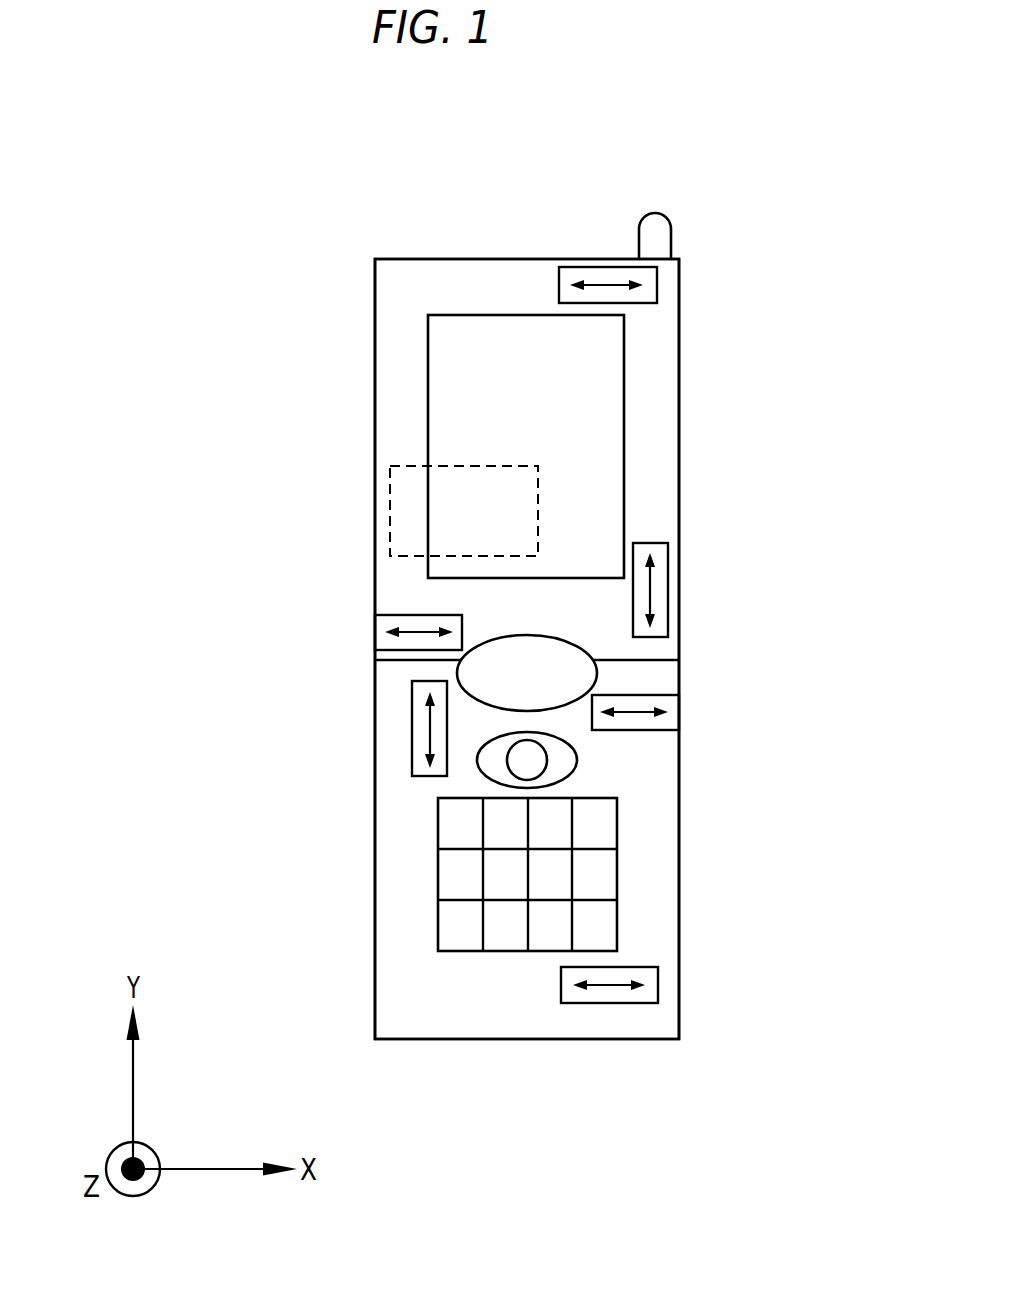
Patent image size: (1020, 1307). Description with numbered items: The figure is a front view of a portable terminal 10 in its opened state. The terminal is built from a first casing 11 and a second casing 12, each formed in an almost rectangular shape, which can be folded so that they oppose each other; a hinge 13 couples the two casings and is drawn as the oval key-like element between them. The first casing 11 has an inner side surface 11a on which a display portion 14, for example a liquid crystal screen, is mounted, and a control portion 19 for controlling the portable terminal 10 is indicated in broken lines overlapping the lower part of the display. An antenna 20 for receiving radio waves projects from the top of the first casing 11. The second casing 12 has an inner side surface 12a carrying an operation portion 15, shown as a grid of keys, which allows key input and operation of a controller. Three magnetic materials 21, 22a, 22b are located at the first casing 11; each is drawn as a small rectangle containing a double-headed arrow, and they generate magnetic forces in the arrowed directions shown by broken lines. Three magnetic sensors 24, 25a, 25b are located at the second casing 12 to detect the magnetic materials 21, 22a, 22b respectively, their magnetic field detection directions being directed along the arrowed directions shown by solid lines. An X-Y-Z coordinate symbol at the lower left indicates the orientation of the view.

The portable terminal 10 is at (338, 210).
The first casing 11 is at (373, 372).
The inner side surface of first casing 11a is at (660, 452).
The second casing 12 is at (375, 842).
The inner side surface of second casing 12a is at (657, 853).
The hinge 13 is at (542, 650).
The display portion 14 is at (468, 327).
The operation portion 15 is at (438, 894).
The control portion 19 is at (390, 502).
The antenna 20 is at (655, 222).
The magnetic material 21 is at (600, 286).
The magnetic material 22a is at (415, 633).
The magnetic material 22b is at (652, 588).
The magnetic sensor 24 is at (613, 986).
The magnetic sensor 25a is at (428, 727).
The magnetic sensor 25b is at (643, 712).